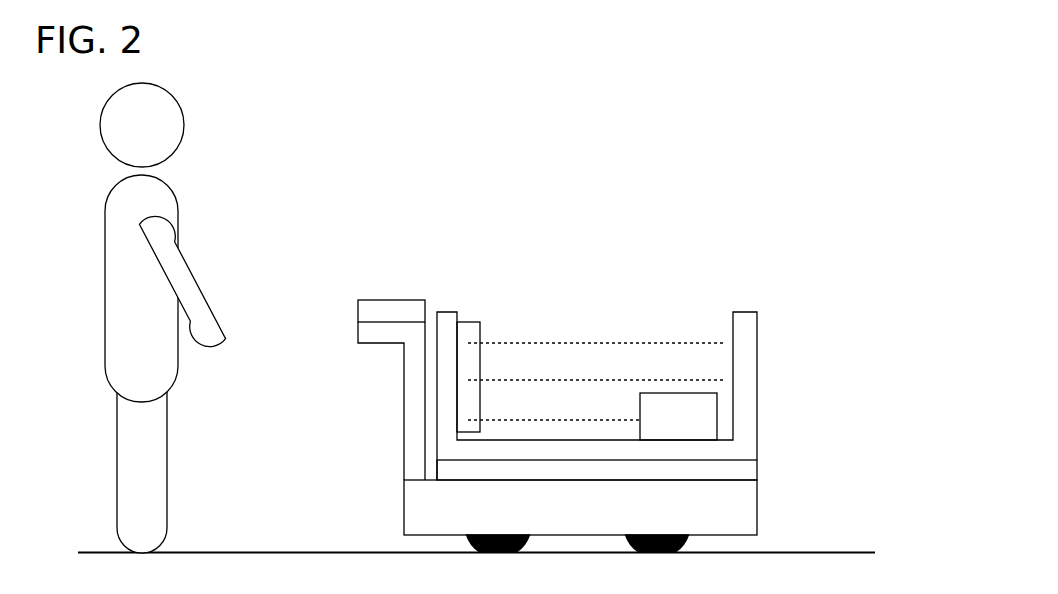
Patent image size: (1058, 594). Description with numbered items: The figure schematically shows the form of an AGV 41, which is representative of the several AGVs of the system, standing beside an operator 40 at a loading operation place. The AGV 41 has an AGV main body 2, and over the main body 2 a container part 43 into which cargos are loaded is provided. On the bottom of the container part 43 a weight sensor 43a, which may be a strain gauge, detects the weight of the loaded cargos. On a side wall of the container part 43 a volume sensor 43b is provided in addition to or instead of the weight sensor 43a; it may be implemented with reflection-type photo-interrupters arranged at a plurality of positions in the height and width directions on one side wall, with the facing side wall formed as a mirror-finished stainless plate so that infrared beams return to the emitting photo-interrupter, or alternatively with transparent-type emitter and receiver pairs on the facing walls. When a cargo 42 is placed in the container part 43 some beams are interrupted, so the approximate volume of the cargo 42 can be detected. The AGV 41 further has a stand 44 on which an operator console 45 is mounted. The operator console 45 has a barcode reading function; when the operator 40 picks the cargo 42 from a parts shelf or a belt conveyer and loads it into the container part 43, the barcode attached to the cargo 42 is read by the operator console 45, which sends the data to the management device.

The AGV main body 2 is at (735, 517).
The operator 40 is at (178, 203).
The AGV 41 is at (728, 192).
The cargo 42 is at (707, 415).
The container part 43 is at (747, 363).
The weight sensor 43a is at (735, 470).
The volume sensor 43b is at (468, 332).
The stand 44 is at (415, 452).
The operator console 45 is at (412, 307).